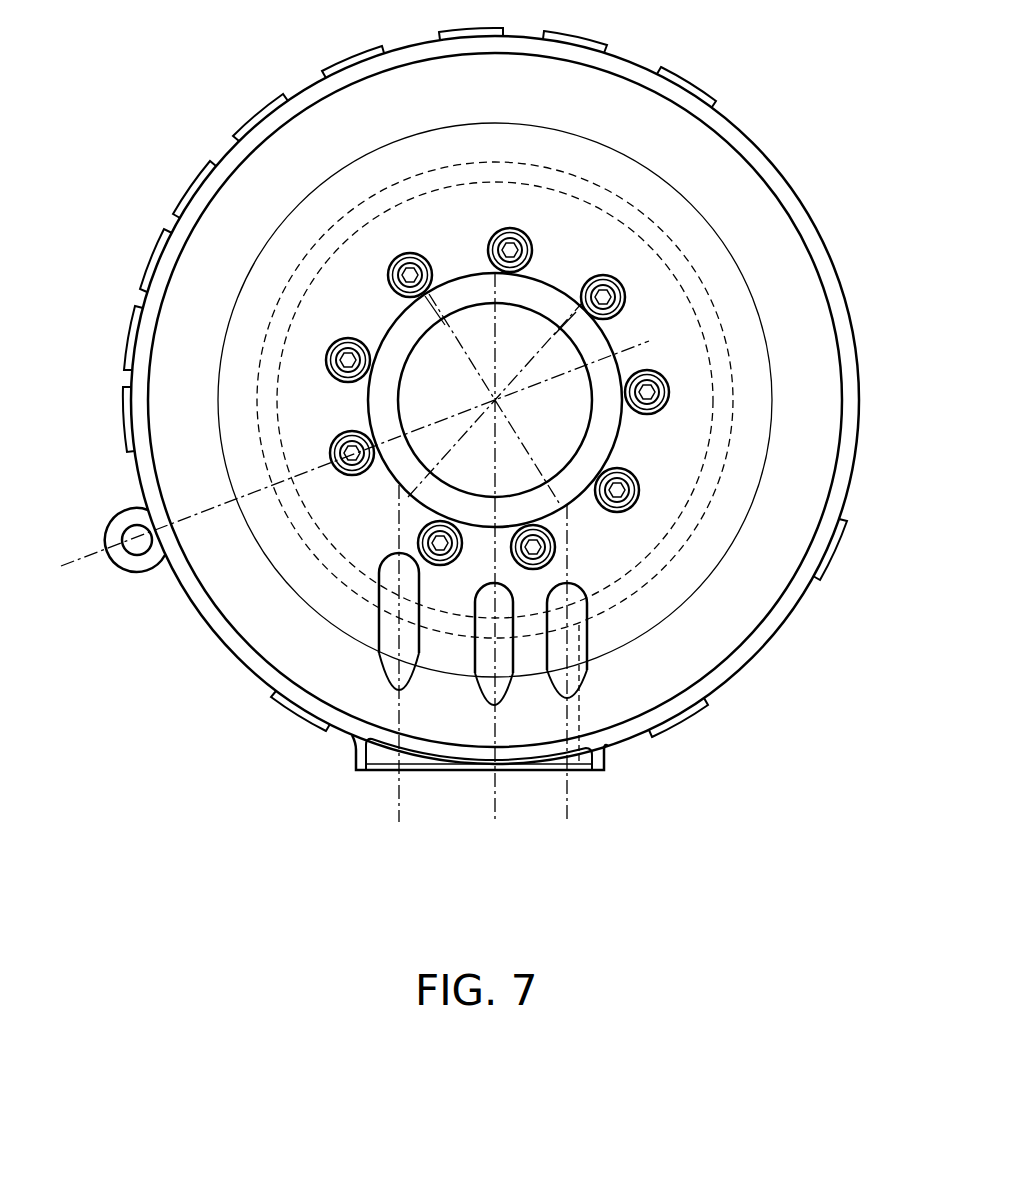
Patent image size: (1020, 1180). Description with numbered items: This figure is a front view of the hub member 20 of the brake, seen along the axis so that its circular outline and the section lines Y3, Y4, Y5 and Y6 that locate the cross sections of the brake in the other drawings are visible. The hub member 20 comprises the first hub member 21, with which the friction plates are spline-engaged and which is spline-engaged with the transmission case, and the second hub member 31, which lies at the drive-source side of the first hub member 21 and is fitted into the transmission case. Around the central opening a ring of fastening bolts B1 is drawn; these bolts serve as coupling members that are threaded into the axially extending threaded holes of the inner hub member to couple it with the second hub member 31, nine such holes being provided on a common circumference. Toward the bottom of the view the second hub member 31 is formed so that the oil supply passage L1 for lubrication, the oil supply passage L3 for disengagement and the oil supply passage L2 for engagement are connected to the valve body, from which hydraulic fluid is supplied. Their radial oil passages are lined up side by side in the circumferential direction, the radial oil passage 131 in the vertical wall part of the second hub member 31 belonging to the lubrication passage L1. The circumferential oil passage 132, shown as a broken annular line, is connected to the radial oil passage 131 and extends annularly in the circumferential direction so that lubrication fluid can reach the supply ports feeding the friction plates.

The hub member 20 is at (750, 114).
The first hub member 21 is at (688, 82).
The second hub member 31 is at (808, 473).
The radial oil passage 131 is at (553, 688).
The circumferential oil passage 132 is at (735, 394).
The fastening bolt B1 is at (337, 446).
The oil supply passage for lubrication L1 is at (583, 633).
The oil supply passage for engagement L2 is at (382, 647).
The oil supply passage for disengagement L3 is at (485, 665).
The line Y3- Y3 is at (70, 557).
The line Y4- Y4 is at (466, 287).
The line Y5- Y5 is at (572, 320).
The line Y6- Y6 is at (498, 289).